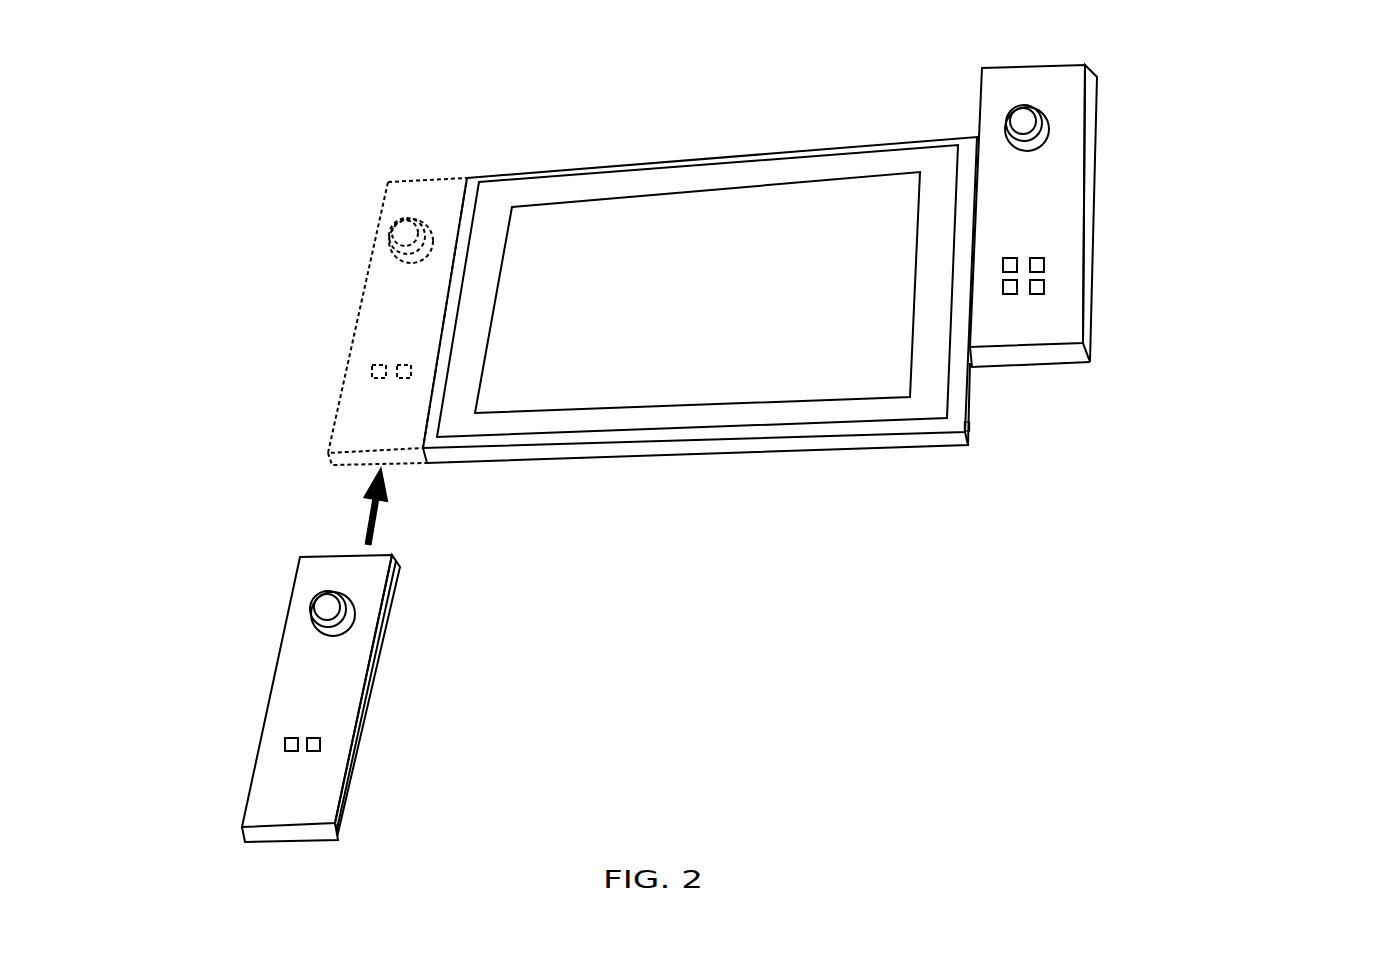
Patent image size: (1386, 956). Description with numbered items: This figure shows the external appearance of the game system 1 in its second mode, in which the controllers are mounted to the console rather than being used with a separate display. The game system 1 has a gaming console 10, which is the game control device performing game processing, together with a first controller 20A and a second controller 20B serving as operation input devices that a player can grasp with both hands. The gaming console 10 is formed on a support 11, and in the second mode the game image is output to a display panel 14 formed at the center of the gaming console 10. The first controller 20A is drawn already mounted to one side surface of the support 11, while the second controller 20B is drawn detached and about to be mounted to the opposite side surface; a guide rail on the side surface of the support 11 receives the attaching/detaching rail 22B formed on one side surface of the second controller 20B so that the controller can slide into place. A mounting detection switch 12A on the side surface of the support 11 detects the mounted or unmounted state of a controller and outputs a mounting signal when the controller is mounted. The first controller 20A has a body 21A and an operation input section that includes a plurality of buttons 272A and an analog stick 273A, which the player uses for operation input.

The game system 1 is at (701, 451).
The gaming console 10 is at (835, 314).
The support 11 is at (805, 442).
The mounting detection switch 12A is at (1027, 453).
The display panel 14 is at (895, 328).
The first controller 20A is at (1161, 241).
The second controller 20B is at (394, 678).
The body 21A is at (1023, 327).
The attaching/detaching rail 22B is at (536, 694).
The buttons 272A is at (1067, 263).
The analog stick 273A is at (1038, 122).